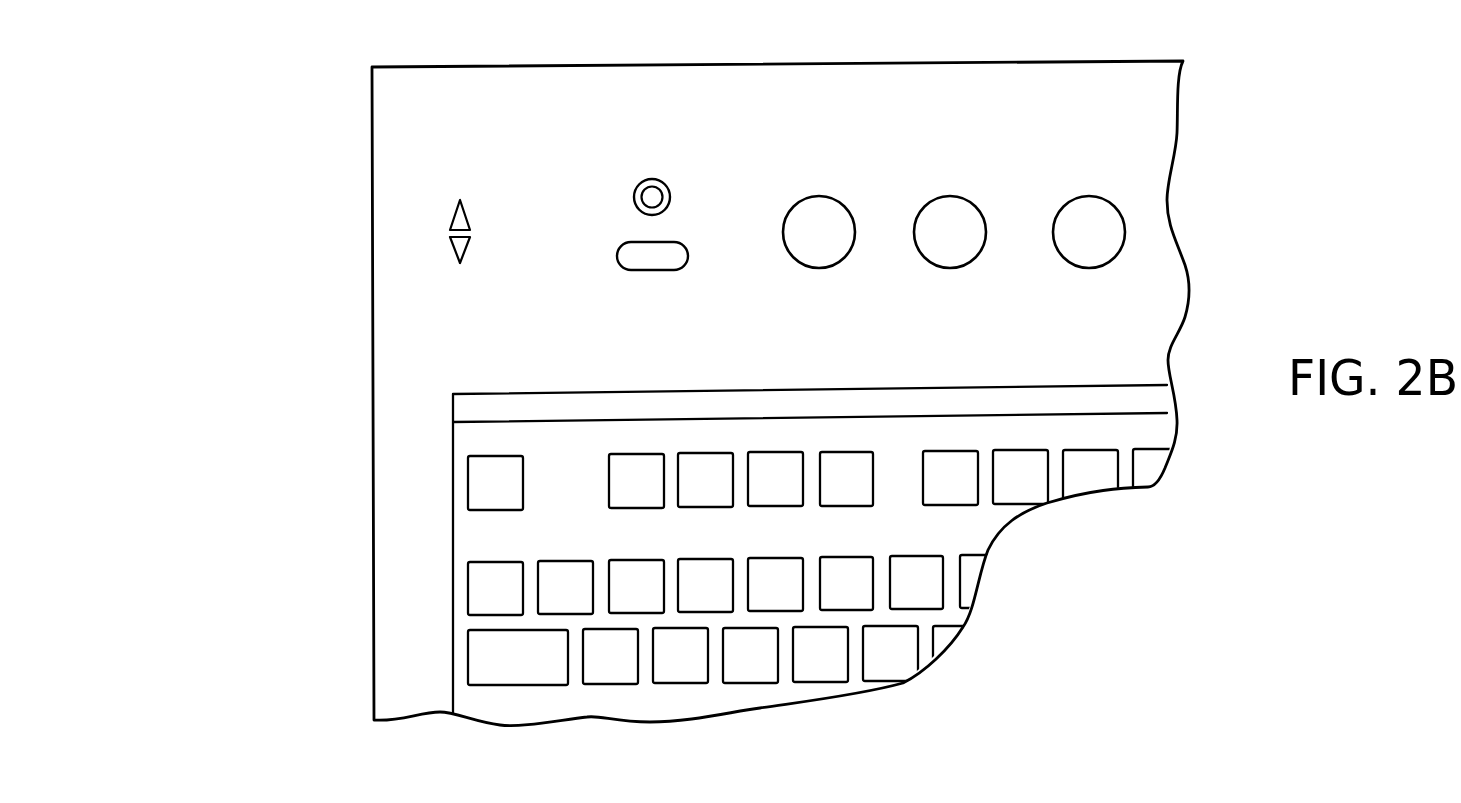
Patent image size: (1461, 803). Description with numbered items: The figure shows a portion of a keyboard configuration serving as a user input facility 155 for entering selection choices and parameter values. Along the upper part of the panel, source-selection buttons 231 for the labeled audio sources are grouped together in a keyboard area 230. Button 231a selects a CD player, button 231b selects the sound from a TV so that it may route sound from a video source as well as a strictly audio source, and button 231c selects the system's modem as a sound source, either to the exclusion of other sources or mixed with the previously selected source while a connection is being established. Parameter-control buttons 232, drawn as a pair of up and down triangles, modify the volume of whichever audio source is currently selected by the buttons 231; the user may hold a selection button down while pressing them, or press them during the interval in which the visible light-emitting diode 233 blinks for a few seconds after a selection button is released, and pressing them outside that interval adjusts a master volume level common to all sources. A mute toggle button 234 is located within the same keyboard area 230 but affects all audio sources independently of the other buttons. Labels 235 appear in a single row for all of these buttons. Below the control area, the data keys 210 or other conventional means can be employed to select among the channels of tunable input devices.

The user input facility 155 is at (250, 113).
The data keys 210 is at (319, 553).
The keyboard area 230 is at (316, 226).
The source-selection buttons 231 is at (1148, 225).
The CD selection button 231a is at (1088, 196).
The TV selection button 231b is at (818, 196).
The modem selection button 231c is at (949, 196).
The parameter-control buttons 232 is at (460, 203).
The light-emitting diode 233 is at (652, 179).
The mute toggle button 234 is at (672, 242).
The labels 235 is at (432, 304).